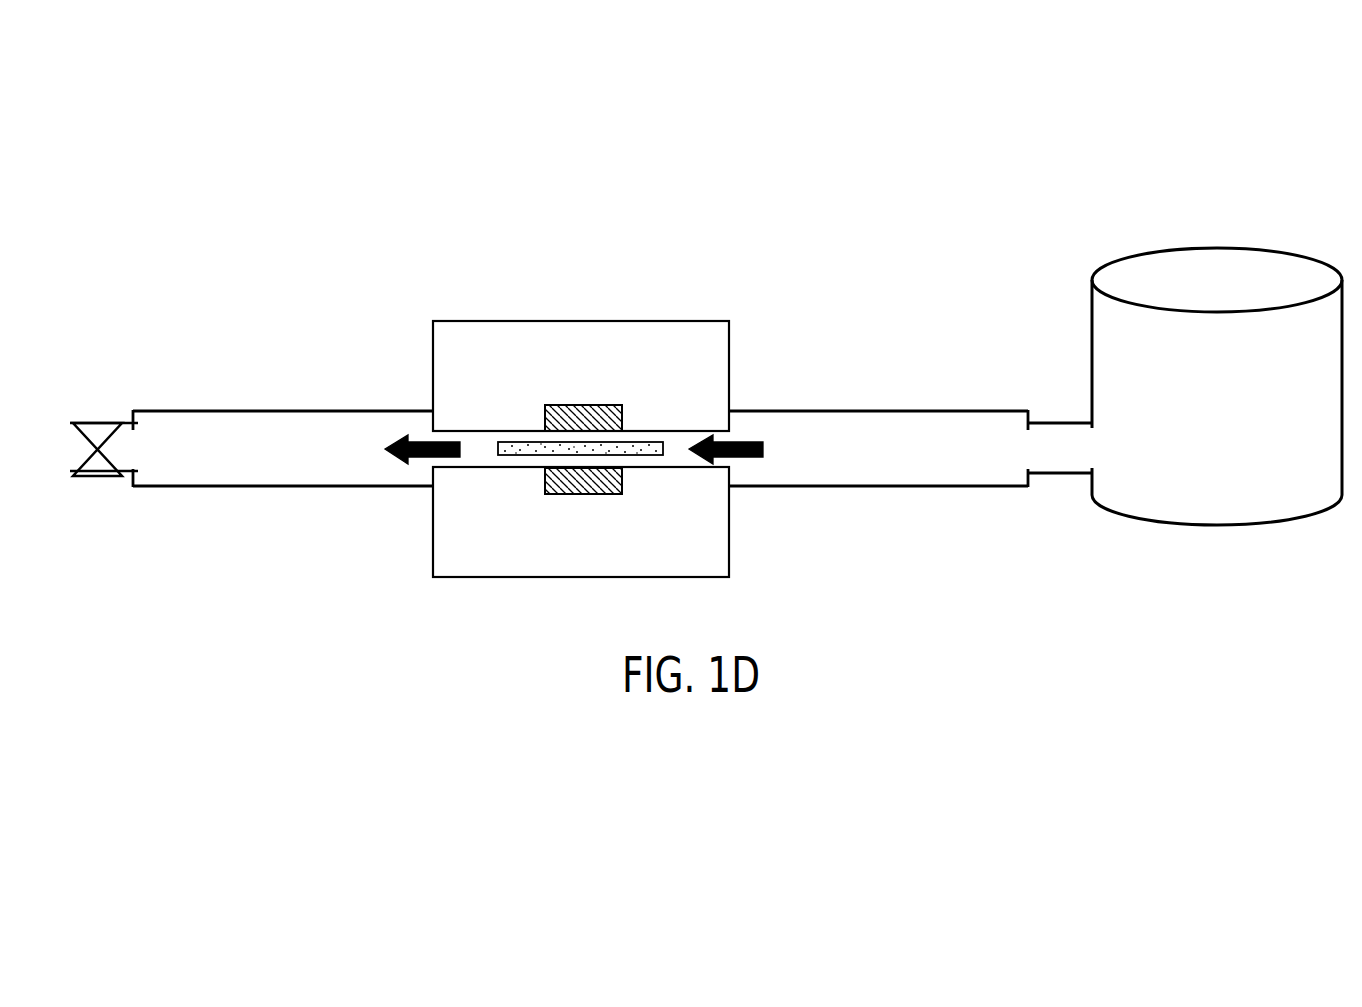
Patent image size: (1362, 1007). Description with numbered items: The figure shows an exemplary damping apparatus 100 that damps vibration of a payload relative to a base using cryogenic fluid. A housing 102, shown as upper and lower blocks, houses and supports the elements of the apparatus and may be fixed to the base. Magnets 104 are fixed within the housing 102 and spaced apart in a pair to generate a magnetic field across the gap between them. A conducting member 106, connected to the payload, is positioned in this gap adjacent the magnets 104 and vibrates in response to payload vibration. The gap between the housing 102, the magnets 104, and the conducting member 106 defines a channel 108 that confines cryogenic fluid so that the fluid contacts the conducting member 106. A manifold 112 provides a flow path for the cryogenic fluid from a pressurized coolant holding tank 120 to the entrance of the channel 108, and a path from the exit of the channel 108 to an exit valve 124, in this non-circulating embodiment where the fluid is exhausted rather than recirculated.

The damping apparatus 100 is at (343, 105).
The housing 102 is at (720, 340).
The magnets 104 is at (590, 410).
The conducting member 106 is at (665, 449).
The channel 108 is at (475, 450).
The manifold 112 is at (292, 422).
The coolant holding tank 120 is at (1107, 500).
The exit valve 124 is at (100, 422).